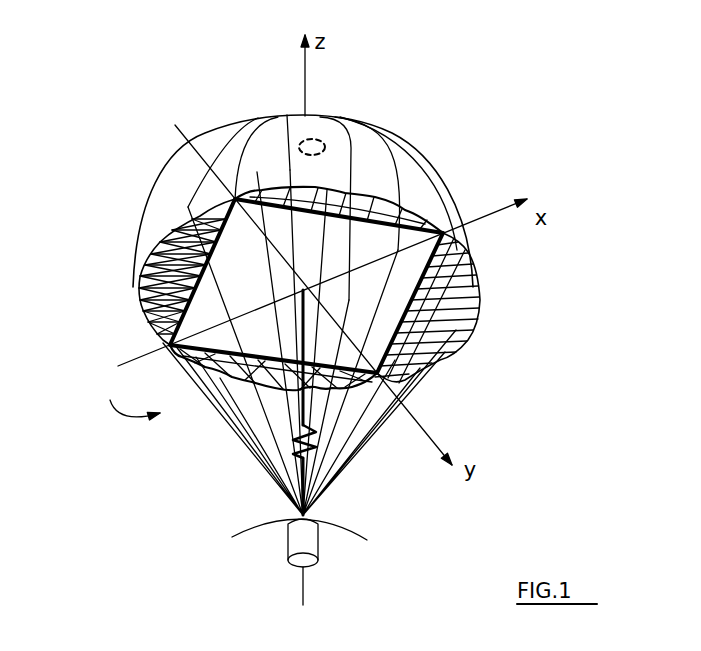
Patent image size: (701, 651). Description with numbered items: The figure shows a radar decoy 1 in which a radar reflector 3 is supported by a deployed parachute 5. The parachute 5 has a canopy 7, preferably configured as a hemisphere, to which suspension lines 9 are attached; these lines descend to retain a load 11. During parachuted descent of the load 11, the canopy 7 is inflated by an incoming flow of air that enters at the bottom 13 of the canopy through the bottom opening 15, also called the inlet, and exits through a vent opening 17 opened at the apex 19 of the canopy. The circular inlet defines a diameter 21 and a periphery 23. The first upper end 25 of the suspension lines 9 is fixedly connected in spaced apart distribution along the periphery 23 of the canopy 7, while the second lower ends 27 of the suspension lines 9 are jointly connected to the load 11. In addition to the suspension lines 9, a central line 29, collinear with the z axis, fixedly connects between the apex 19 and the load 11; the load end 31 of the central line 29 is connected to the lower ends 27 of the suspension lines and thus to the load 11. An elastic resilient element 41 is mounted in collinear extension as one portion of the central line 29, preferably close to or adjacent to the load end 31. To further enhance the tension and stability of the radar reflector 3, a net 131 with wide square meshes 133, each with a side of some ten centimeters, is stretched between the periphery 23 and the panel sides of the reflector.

The radar decoy 1 is at (142, 58).
The radar reflector 3 is at (315, 258).
The parachute 5 is at (428, 92).
The canopy 7 is at (421, 170).
The suspension lines 9 is at (408, 375).
The load 11 is at (318, 553).
The bottom 13 is at (140, 306).
The bottom opening 15 is at (130, 395).
The vent opening 17 is at (310, 140).
The apex 19 is at (273, 108).
The diameter 21 is at (450, 262).
The periphery 23 is at (481, 296).
The first upper end 25 is at (440, 358).
The second lower ends 27 is at (353, 535).
The central line 29 is at (303, 340).
The load end 31 is at (250, 539).
The elastic resilient element 41 is at (298, 430).
The net 131 is at (160, 207).
The square meshes 133 is at (140, 278).